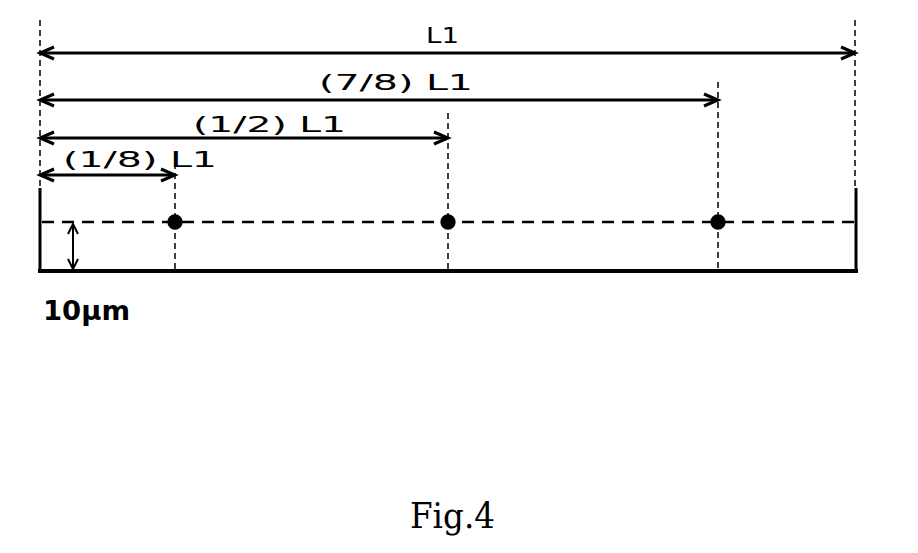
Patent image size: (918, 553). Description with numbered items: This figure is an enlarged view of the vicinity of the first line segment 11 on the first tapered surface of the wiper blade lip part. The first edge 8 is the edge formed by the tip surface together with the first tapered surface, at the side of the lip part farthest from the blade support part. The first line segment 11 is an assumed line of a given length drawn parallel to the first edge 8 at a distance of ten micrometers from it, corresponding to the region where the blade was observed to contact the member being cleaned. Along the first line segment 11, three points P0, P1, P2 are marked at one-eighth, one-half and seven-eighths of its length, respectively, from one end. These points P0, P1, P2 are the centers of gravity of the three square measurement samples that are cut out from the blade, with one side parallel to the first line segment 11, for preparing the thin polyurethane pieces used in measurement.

The first edge 8 is at (150, 273).
The first line segment 11 is at (295, 222).
The center of gravity of first measurement sample P0 is at (178, 228).
The center of gravity of second measurement sample P1 is at (451, 228).
The center of gravity of third measurement sample P2 is at (722, 228).